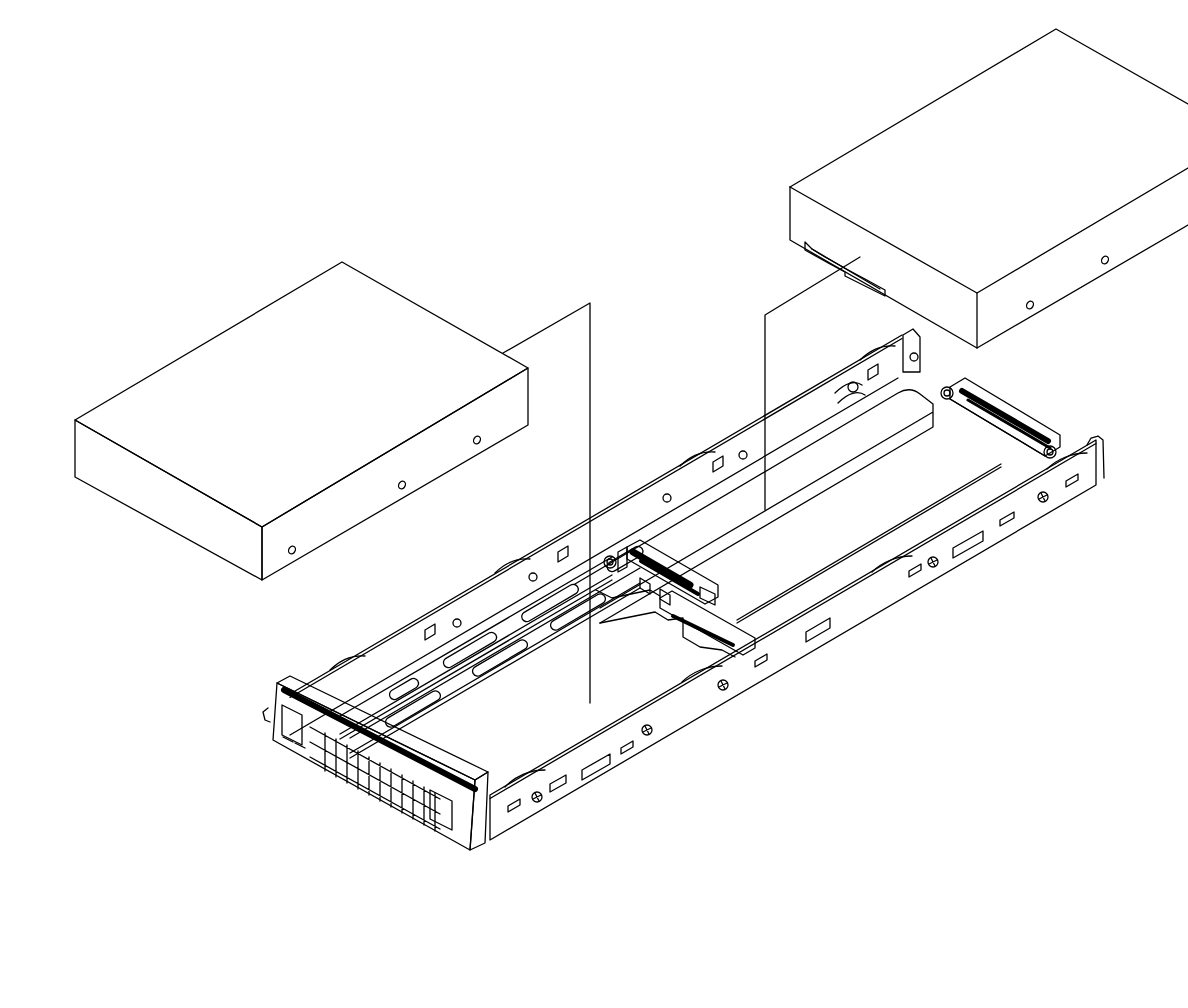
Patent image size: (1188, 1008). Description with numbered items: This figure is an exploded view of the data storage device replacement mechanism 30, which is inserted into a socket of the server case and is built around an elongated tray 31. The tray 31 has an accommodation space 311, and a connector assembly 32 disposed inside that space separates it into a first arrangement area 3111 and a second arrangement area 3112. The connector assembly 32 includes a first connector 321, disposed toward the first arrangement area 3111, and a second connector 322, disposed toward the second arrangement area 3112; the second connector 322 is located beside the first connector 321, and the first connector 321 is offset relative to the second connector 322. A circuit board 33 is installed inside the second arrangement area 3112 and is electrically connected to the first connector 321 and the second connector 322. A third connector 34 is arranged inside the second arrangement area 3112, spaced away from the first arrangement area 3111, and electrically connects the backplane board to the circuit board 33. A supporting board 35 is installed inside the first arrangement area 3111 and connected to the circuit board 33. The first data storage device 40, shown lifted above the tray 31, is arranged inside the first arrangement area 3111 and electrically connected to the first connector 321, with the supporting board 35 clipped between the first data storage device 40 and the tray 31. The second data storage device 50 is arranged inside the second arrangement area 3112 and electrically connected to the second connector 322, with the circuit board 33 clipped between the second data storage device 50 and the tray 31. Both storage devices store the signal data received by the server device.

The data storage device replacement mechanism 30 is at (391, 182).
The tray 31 is at (692, 705).
The accommodation space 311 is at (917, 699).
The first arrangement area 3111 is at (775, 626).
The second arrangement area 3112 is at (787, 623).
The connector assembly 32 is at (633, 528).
The first connector 321 is at (737, 620).
The second connector 322 is at (672, 545).
The circuit board 33 is at (970, 467).
The third connector 34 is at (1013, 410).
The supporting board 35 is at (473, 702).
The first data storage device 40 is at (257, 337).
The second data storage device 50 is at (897, 150).